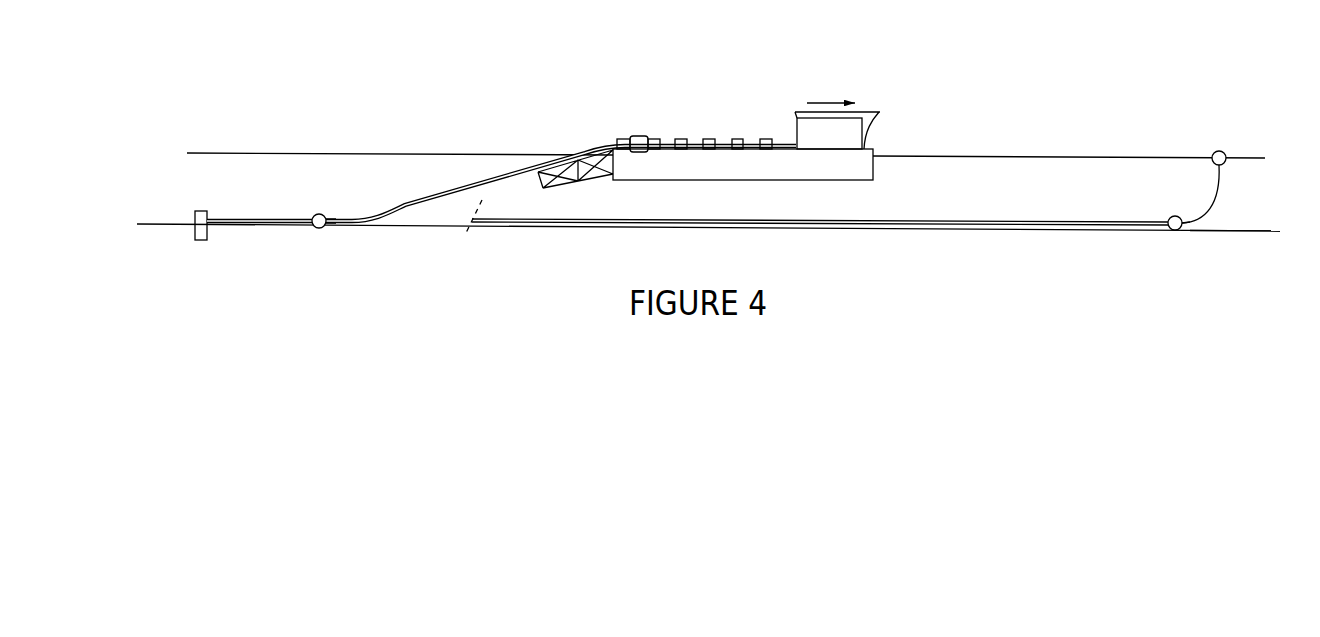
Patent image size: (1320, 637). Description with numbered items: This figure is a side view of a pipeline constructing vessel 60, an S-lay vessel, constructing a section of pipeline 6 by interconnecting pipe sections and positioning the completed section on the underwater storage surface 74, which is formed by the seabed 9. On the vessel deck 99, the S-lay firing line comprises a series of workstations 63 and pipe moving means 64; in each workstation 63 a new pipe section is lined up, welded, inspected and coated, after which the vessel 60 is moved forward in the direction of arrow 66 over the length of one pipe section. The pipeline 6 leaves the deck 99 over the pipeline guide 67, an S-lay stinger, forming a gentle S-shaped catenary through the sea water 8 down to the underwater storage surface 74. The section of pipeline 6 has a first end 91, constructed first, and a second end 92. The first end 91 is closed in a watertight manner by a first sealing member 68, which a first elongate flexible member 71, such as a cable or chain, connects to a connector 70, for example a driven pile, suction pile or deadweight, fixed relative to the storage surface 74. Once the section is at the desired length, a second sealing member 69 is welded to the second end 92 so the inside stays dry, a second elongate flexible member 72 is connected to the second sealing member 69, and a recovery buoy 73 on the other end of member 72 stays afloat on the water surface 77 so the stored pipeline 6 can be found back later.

The pipeline 6 is at (489, 178).
The sea water 8 is at (345, 186).
The seabed 9 is at (152, 222).
The pipeline constructing vessel 60 is at (883, 80).
The workstations 63 is at (740, 136).
The pipe moving means 64 is at (640, 136).
The arrow 66 is at (827, 100).
The pipeline guide 67 is at (578, 166).
The first sealing member 68 is at (322, 229).
The second sealing member 69 is at (1179, 232).
The connector 70 is at (204, 209).
The first elongate flexible member 71 is at (256, 215).
The second elongate flexible member 72 is at (1210, 206).
The buoy 73 is at (1224, 151).
The underwater storage surface 74 is at (1229, 228).
The water surface 77 is at (1250, 158).
The first end 91 is at (338, 226).
The second end 92 is at (1161, 231).
The vessel deck 99 is at (752, 139).